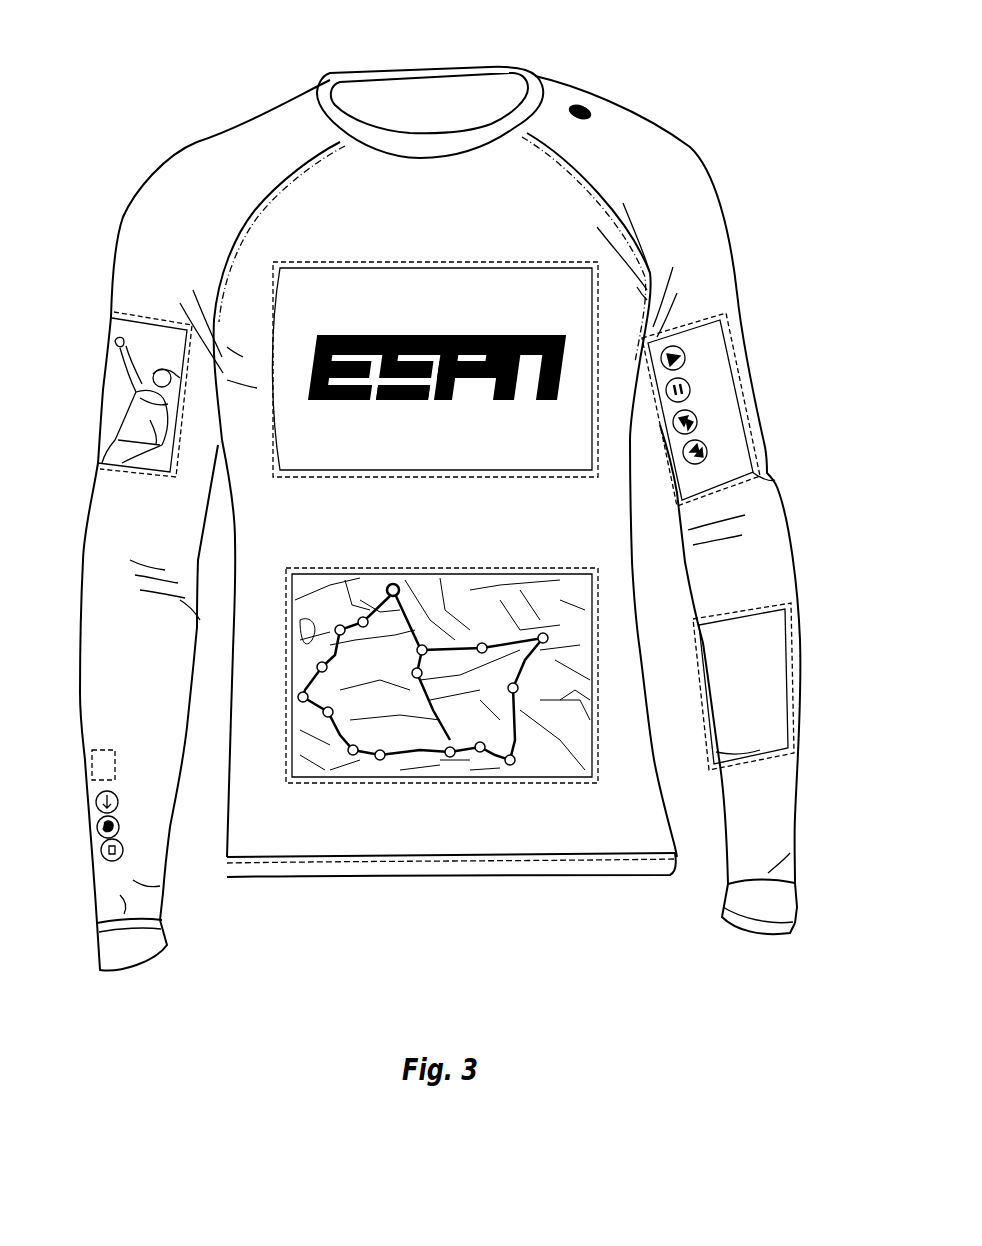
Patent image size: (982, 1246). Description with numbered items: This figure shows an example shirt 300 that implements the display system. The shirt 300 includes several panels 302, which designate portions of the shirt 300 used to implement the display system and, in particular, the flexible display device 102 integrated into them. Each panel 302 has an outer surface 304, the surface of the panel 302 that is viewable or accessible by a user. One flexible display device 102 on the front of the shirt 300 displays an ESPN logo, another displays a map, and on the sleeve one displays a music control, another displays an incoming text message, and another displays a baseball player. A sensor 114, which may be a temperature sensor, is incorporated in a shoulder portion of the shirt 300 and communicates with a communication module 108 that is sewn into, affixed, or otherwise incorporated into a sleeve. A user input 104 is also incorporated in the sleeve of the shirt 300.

The shirt 300 is at (128, 60).
The sensor 114 is at (591, 115).
The flexible display device 102 is at (110, 390).
The panel 302 is at (123, 468).
The outer surface 304 is at (112, 348).
The user input 104 is at (103, 845).
The communication module 108 is at (92, 767).